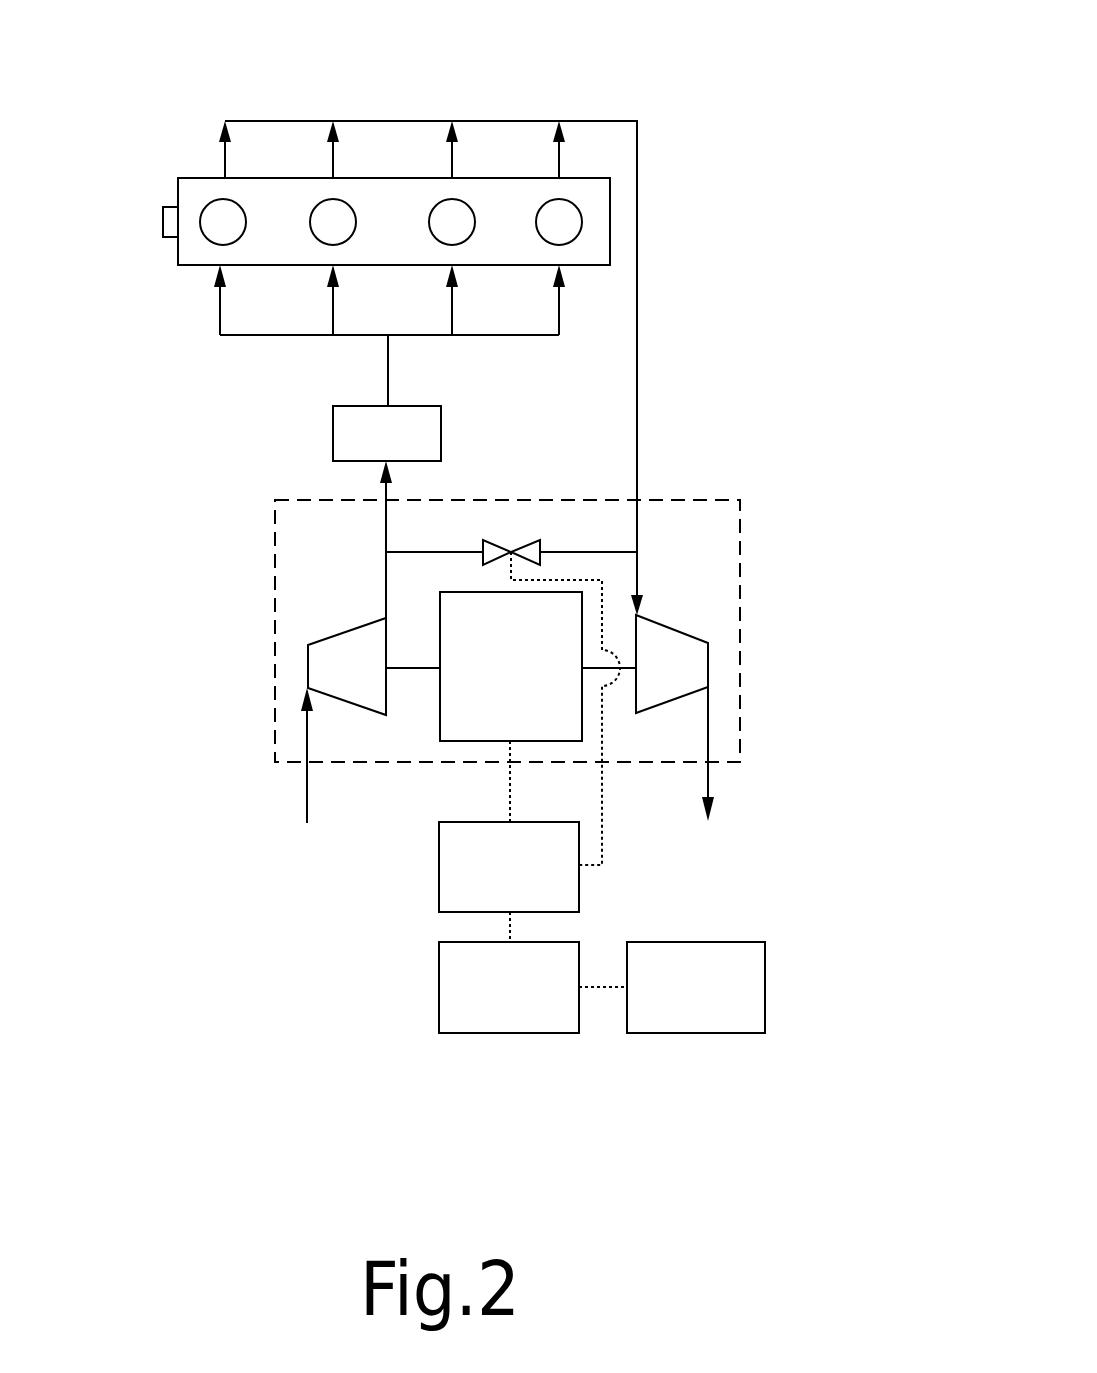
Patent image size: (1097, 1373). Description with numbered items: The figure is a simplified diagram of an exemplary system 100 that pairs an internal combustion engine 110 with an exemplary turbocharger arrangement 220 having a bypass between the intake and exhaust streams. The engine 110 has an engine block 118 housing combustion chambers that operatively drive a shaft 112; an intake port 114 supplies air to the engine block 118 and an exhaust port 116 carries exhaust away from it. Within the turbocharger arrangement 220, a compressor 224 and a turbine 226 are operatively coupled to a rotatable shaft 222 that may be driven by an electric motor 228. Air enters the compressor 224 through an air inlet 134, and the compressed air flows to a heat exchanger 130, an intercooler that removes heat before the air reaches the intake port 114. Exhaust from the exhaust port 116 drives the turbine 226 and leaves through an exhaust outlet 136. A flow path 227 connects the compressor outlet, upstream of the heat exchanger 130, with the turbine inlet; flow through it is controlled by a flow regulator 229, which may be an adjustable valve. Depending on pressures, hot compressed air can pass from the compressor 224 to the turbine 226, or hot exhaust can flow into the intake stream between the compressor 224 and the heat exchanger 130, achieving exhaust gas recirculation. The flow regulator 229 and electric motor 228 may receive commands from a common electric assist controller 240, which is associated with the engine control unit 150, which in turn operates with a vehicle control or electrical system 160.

The system 100 is at (680, 40).
The internal combustion engine 110 is at (178, 176).
The shaft 112 is at (163, 207).
The intake port 114 is at (220, 336).
The exhaust port 116 is at (403, 120).
The engine block 118 is at (375, 235).
The heat exchanger 130 is at (367, 446).
The air inlet 134 is at (306, 770).
The exhaust outlet 136 is at (710, 792).
The engine control unit 150 is at (489, 1002).
The vehicle control or electrical system 160 is at (676, 1002).
The turbocharger arrangement 220 is at (297, 547).
The rotatable shaft 222 is at (416, 672).
The compressor 224 is at (326, 680).
The turbine 226 is at (652, 680).
The flow path 227 is at (467, 556).
The electric motor 228 is at (491, 680).
The flow regulator 229 is at (484, 542).
The electric assist controller 240 is at (489, 882).